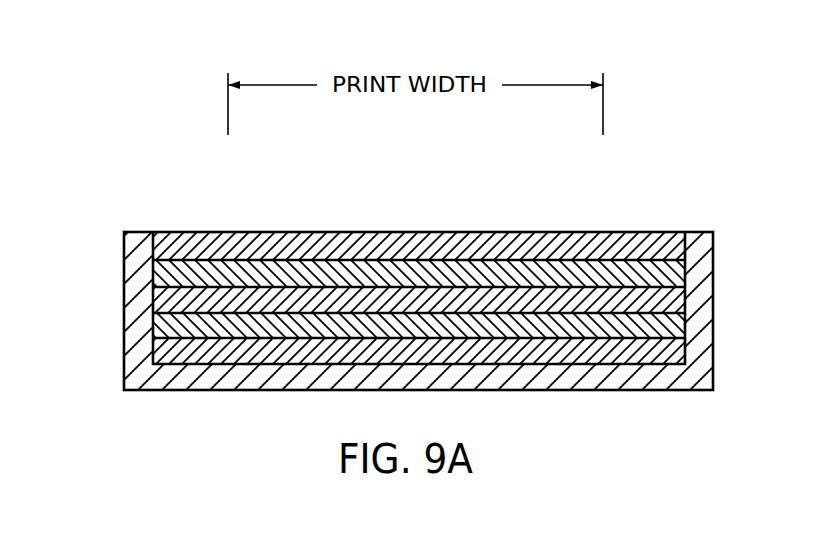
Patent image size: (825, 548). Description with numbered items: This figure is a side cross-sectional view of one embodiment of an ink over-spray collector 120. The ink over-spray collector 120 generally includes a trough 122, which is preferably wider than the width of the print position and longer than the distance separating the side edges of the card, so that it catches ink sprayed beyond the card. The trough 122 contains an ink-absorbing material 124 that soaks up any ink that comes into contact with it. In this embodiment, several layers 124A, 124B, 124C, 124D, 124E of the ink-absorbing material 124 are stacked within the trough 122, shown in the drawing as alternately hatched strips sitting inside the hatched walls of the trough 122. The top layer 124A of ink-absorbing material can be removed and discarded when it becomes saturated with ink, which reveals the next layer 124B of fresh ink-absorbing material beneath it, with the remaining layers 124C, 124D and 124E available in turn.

The ink over-spray collector 120 is at (464, 228).
The trough 122 is at (703, 262).
The ink-absorbing material 124 is at (479, 291).
The top layer 124A is at (510, 233).
The next layer 124B is at (683, 274).
The layer of ink-absorbing material 124C is at (683, 301).
The layer of ink-absorbing material 124D is at (683, 331).
The layer of ink-absorbing material 124E is at (685, 360).